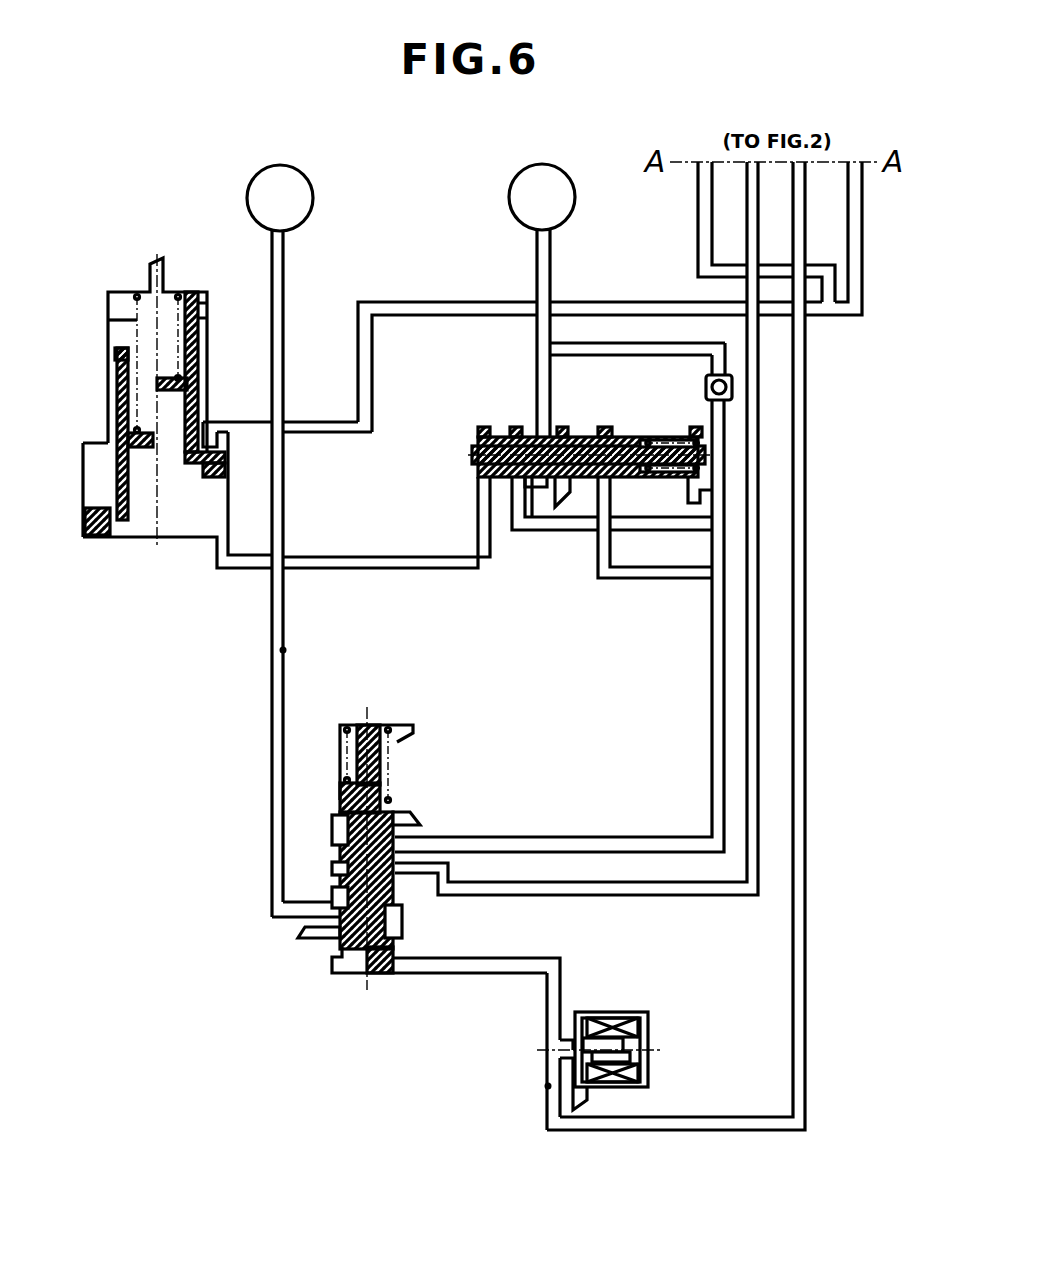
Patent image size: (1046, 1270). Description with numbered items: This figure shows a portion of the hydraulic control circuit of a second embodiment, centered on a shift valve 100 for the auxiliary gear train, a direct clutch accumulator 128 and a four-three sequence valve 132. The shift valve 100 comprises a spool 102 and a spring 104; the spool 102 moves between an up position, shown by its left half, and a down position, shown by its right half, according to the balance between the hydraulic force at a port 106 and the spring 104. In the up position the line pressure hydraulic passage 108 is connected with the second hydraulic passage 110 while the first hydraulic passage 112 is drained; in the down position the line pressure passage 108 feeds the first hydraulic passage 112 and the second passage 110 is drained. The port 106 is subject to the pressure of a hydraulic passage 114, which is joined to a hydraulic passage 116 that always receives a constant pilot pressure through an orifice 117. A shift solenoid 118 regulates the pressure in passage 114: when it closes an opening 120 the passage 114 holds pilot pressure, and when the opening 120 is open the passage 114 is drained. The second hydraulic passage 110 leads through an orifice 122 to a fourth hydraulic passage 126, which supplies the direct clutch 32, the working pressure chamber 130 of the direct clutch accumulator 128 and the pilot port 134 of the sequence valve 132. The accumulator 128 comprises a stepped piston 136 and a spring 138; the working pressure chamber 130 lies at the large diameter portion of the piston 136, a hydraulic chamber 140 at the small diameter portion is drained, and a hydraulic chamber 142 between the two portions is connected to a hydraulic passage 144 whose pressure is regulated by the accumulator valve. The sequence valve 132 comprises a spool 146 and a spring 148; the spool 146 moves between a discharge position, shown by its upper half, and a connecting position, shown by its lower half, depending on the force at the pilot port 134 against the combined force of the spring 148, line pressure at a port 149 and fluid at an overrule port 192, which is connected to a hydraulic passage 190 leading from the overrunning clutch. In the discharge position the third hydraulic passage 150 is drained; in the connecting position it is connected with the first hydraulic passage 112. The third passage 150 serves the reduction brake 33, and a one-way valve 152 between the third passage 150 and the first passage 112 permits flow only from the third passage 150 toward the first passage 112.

The direct clutch 32 is at (313, 198).
The reduction brake 33 is at (509, 201).
The shift valve 100 is at (439, 847).
The spool 102 is at (394, 806).
The spring 104 is at (383, 724).
The port 106 is at (393, 978).
The line pressure hydraulic passage 108 is at (747, 208).
The 2nd hydraulic passage 110 is at (270, 864).
The 1st hydraulic passage 112 is at (530, 531).
The hydraulic passage 114 is at (487, 975).
The hydraulic passage 116 is at (805, 211).
The orifice 117 is at (548, 1086).
The shift solenoid 118 is at (639, 1010).
The opening 120 is at (571, 1040).
The orifice 122 is at (280, 651).
The 4th hydraulic passage 126 is at (284, 488).
The direct clutch accumulator 128 is at (104, 444).
The working pressure chamber 130 is at (193, 540).
The 4-3 sequence valve 132 is at (496, 461).
The pilot port 134 is at (478, 481).
The stepped piston 136 is at (117, 487).
The spring 138 is at (108, 320).
The hydraulic chamber 140 is at (140, 389).
The hydraulic chamber 142 is at (210, 438).
The hydraulic passage 144 is at (358, 394).
The spool 146 is at (572, 437).
The spring 148 is at (672, 433).
The port 149 is at (607, 498).
The 3rd hydraulic passage 150 is at (553, 388).
The one-way valve 152 is at (706, 385).
The hydraulic passage 190 is at (698, 256).
The overrule port 192 is at (692, 482).